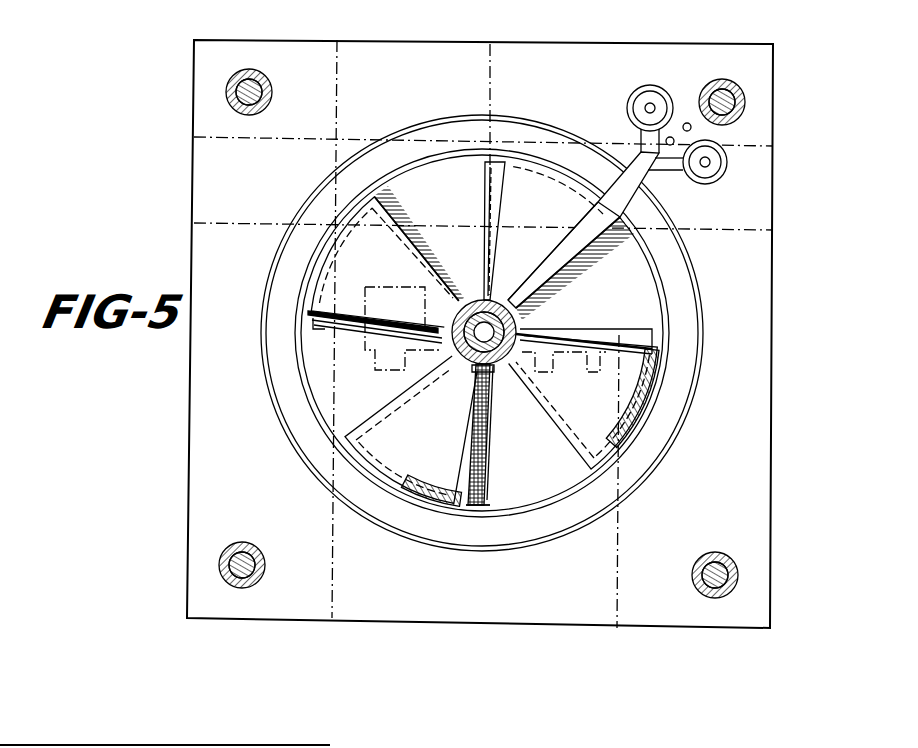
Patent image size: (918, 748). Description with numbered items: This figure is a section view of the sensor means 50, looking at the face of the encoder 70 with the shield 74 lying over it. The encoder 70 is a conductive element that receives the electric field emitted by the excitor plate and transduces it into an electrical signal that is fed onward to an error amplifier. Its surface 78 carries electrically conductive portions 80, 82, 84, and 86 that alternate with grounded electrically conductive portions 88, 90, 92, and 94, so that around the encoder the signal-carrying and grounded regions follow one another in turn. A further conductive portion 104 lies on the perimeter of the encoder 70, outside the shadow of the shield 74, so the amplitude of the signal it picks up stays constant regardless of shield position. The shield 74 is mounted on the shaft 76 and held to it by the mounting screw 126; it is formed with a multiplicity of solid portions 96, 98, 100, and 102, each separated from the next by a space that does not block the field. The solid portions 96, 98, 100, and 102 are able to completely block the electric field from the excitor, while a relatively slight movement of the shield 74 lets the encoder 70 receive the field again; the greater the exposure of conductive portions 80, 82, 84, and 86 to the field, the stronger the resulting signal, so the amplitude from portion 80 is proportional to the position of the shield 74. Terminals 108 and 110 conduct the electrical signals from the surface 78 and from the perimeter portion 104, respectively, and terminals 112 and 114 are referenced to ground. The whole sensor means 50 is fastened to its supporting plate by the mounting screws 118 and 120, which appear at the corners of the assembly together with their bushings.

The sensor means 50 is at (788, 250).
The encoder 70 is at (484, 158).
The shield 74 is at (552, 272).
The shaft 76 is at (532, 355).
The surface 78 is at (523, 485).
The electrically conductive portion 80 is at (490, 195).
The electrically conductive portion 82 is at (642, 350).
The electrically conductive portion 84 is at (476, 495).
The electrically conductive portion 86 is at (325, 365).
The grounded electrically conductive portion 88 is at (404, 175).
The grounded electrically conductive portion 90 is at (650, 302).
The grounded electrically conductive portion 92 is at (585, 482).
The grounded electrically conductive portion 94 is at (340, 408).
The solid portion 96 is at (502, 243).
The solid portion 98 is at (630, 400).
The solid portion 100 is at (410, 475).
The solid portion 102 is at (343, 262).
The conductive portion 104 is at (322, 330).
The terminal 108 is at (707, 166).
The terminal 110 is at (650, 104).
The terminal 112 is at (687, 123).
The terminal 114 is at (675, 141).
The mounting screw 118 is at (232, 95).
The mounting screw 120 is at (746, 104).
The mounting screw 126 is at (490, 378).